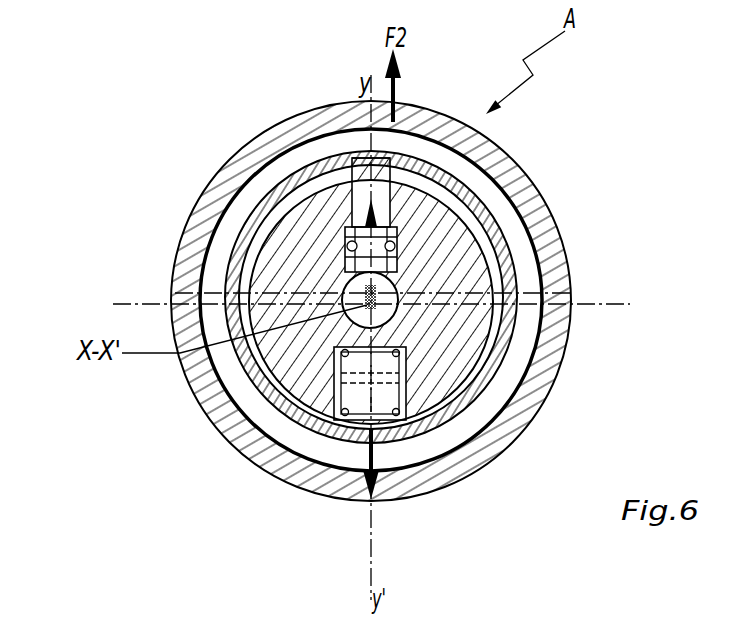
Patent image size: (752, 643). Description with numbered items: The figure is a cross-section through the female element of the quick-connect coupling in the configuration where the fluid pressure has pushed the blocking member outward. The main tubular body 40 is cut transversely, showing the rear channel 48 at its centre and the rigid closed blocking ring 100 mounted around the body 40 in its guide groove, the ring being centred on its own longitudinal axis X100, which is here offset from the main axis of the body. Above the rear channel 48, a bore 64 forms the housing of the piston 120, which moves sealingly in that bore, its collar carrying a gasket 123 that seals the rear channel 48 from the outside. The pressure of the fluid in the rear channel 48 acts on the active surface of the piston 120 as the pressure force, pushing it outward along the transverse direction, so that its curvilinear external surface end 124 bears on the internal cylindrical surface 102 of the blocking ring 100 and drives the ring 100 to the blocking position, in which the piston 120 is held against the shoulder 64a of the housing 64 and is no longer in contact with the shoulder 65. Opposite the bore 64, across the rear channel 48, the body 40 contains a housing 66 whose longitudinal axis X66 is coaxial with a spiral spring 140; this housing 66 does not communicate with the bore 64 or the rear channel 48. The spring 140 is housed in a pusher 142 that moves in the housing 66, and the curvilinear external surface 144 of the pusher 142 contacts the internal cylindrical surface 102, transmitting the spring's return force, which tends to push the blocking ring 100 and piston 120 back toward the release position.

The main tubular body 40 is at (502, 263).
The rear channel 48 is at (450, 334).
The bore 64 is at (462, 225).
The shoulder 64a is at (343, 247).
The shoulder 65 is at (343, 232).
The housing 66 is at (340, 394).
The blocking ring 100 is at (492, 386).
The internal cylindrical surface 102 is at (409, 176).
The piston 120 is at (352, 182).
The gasket 123 is at (462, 283).
The curvilinear external surface end 124 is at (363, 157).
The spiral spring 140 is at (337, 402).
The pusher 142 is at (407, 375).
The curvilinear external surface 144 is at (336, 431).
The longitudinal axis X100 is at (352, 283).
The longitudinal axis X66 is at (368, 532).